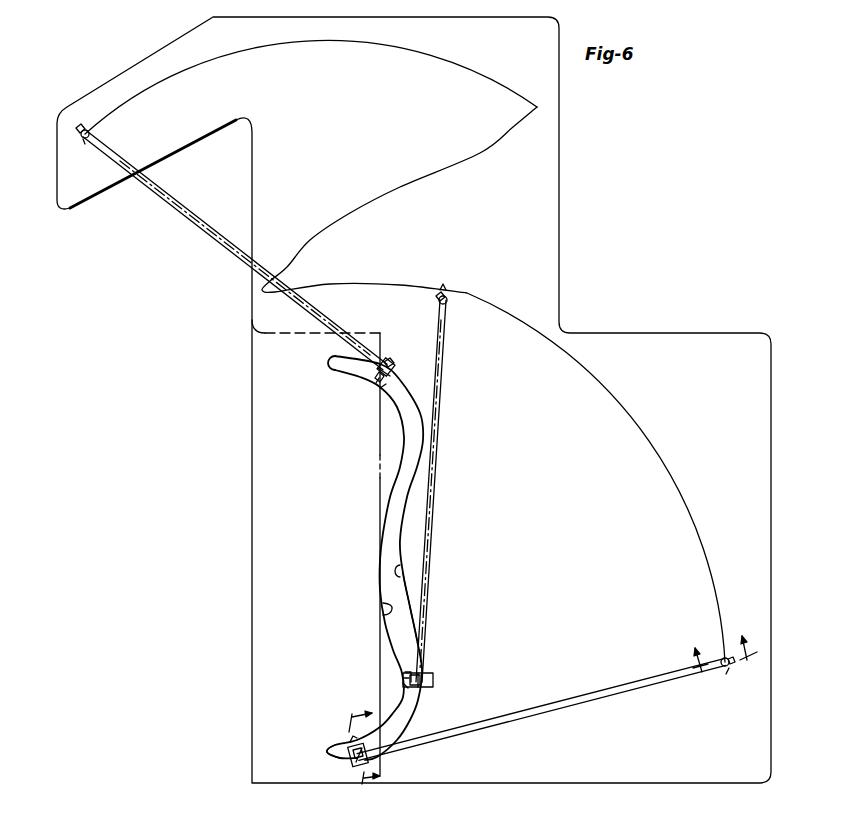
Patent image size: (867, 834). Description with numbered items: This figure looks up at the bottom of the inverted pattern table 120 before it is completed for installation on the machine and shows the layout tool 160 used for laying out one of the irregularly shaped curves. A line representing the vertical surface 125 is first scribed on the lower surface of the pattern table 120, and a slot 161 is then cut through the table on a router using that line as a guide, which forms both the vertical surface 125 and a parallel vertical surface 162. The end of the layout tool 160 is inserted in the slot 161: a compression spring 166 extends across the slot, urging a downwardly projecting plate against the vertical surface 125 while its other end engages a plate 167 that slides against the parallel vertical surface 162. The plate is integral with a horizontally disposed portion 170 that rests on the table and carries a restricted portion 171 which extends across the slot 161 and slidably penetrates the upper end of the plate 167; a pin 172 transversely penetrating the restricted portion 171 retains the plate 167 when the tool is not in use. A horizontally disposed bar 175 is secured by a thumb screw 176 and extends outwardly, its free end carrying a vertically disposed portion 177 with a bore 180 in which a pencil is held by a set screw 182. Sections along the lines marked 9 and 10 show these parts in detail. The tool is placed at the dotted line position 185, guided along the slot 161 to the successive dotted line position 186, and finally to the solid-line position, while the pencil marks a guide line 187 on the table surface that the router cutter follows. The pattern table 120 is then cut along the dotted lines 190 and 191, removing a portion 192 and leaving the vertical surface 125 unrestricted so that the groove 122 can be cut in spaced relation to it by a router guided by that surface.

The pattern table 120 is at (562, 262).
The groove 122 is at (378, 548).
The vertical surface 125 is at (403, 572).
The layout tool 160 is at (177, 222).
The slot 161 is at (404, 638).
The parallel vertical surface 162 is at (384, 612).
The compression spring 166 is at (392, 371).
The plate 167 is at (375, 378).
The horizontally disposed portion 170 is at (394, 366).
The restricted portion 171 is at (378, 381).
The pin 172 is at (382, 391).
The horizontally disposed bar 175 is at (188, 216).
The thumb screw 176 is at (388, 360).
The vertically disposed portion 177 is at (84, 140).
The bore 180 is at (90, 134).
The set screw 182 is at (83, 128).
The dotted line position 185 is at (222, 252).
The dotted line position 186 is at (440, 458).
The guide line 187 is at (332, 47).
The dotted line 190 is at (364, 332).
The dotted line 191 is at (380, 458).
The portion 192 is at (252, 655).
The section line 9- 9 is at (353, 760).
The section line 10- 10 is at (728, 670).